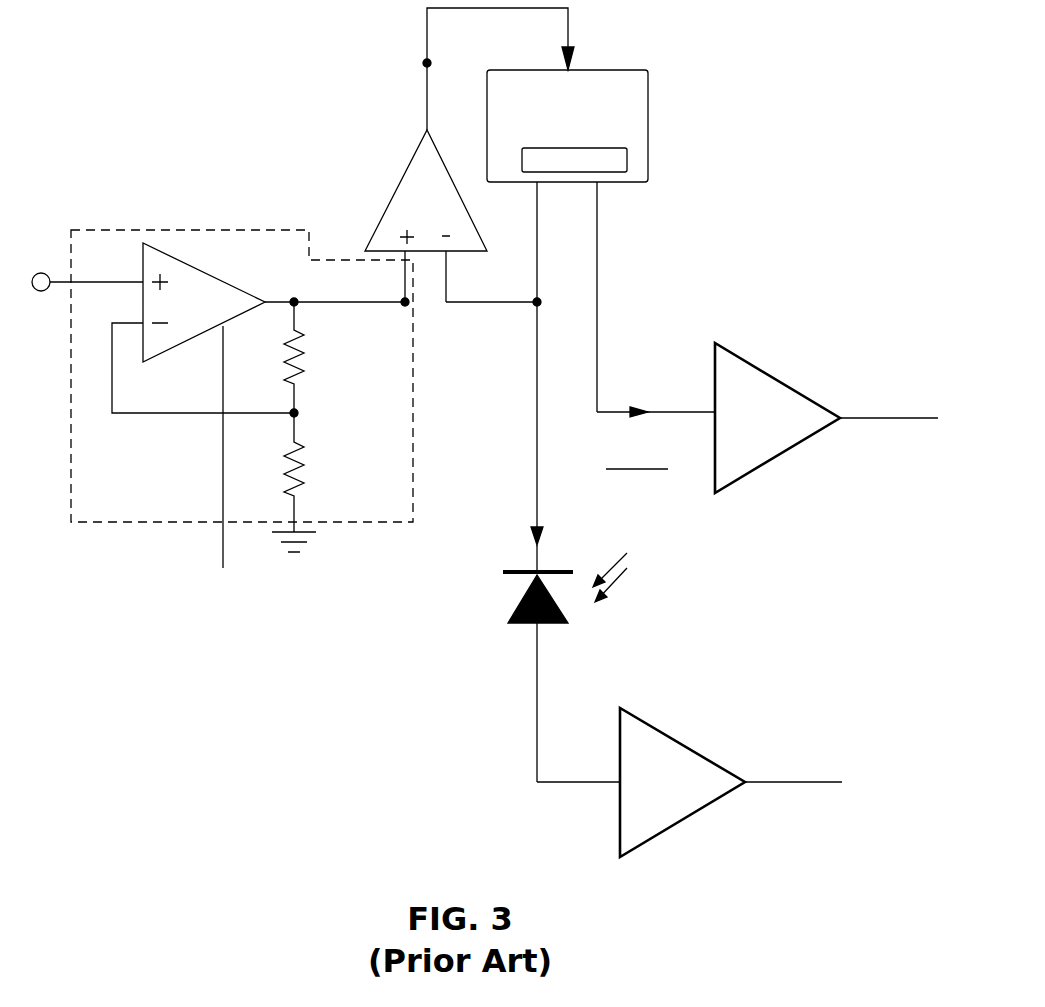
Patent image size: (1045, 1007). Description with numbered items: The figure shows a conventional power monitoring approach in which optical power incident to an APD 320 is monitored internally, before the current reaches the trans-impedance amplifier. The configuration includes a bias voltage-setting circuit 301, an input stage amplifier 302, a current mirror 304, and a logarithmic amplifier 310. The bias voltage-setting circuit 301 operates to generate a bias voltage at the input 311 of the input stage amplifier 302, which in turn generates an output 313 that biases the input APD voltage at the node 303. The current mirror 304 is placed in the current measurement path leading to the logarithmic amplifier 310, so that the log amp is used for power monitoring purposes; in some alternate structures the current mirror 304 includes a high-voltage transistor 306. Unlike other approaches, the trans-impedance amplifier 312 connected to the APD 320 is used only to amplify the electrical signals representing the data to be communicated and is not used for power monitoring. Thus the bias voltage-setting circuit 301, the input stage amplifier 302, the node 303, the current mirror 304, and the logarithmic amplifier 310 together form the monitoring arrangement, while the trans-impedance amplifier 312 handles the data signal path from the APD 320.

The bias voltage-setting circuit 301 is at (138, 230).
The input stage amplifier 302 is at (393, 195).
The node 303 is at (493, 326).
The current mirror 304 is at (648, 123).
The high-voltage transistor 306 is at (627, 162).
The logarithmic amplifier 310 is at (767, 372).
The input 311 is at (405, 302).
The trans-impedance amplifier 312 is at (700, 752).
The output 313 is at (427, 63).
The APD 320 is at (523, 595).